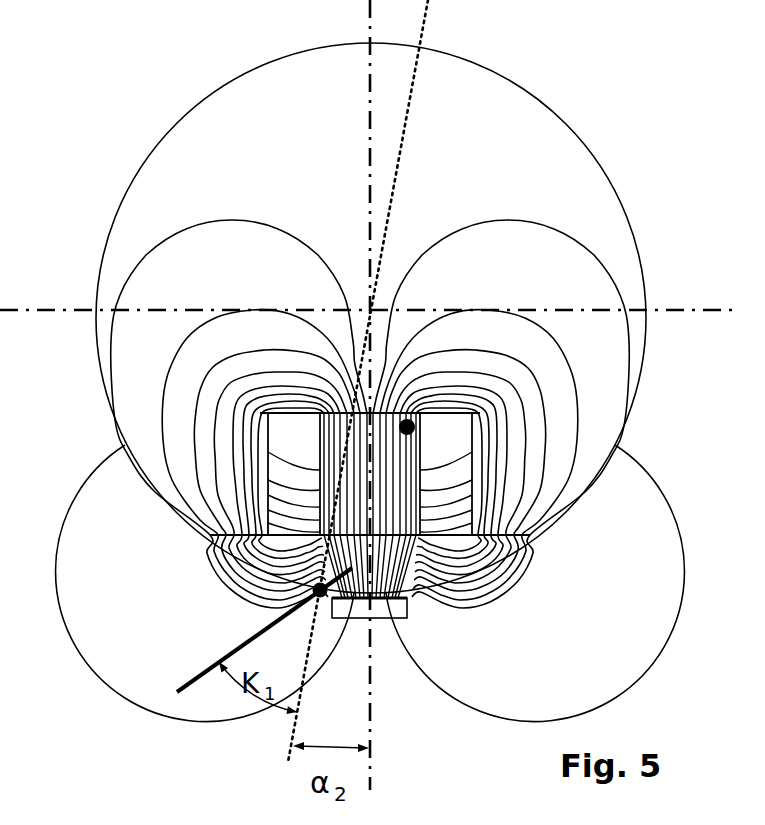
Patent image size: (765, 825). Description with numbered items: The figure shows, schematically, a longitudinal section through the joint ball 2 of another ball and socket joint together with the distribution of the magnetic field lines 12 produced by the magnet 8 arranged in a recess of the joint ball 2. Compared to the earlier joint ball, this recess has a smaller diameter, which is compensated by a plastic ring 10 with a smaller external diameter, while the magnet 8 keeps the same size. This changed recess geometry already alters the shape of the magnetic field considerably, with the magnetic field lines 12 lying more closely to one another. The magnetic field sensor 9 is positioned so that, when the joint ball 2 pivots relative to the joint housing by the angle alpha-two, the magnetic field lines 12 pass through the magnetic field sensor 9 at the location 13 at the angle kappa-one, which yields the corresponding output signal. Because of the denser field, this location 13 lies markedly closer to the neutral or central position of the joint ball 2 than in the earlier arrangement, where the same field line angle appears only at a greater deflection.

The joint ball 2 is at (152, 183).
The magnet 8 is at (407, 427).
The magnetic field sensor 9 is at (383, 612).
The plastic ring 10 is at (441, 437).
The magnetic field lines 12 is at (684, 583).
The location of the magnetic field sensor 13 is at (320, 590).